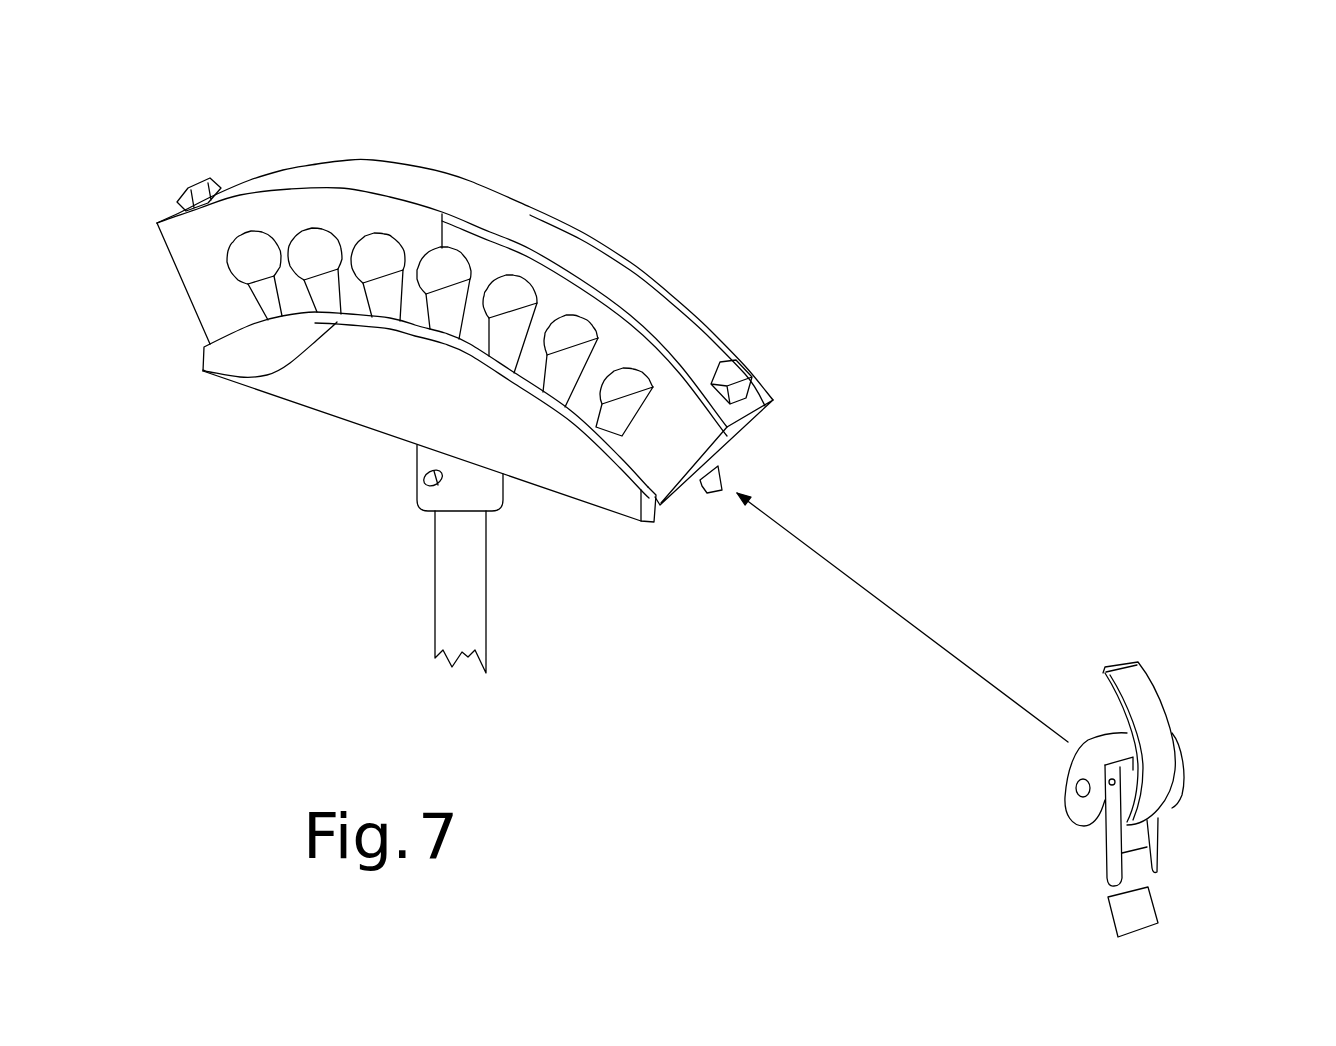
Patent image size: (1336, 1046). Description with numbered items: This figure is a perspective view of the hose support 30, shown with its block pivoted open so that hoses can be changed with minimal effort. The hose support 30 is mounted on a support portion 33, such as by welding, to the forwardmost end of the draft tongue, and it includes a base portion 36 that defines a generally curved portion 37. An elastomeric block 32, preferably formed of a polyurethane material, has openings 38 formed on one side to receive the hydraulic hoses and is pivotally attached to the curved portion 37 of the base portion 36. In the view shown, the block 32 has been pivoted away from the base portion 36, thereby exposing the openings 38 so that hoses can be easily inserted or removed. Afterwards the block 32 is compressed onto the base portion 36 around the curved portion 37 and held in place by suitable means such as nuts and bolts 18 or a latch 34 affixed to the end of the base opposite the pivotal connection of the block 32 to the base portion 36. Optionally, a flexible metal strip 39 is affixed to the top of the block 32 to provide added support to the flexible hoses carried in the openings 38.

The bolts 18 is at (195, 180).
The hose support 30 is at (793, 247).
The elastomeric block 32 is at (735, 452).
The support portion 33 is at (430, 585).
The latch 34 is at (1185, 757).
The base portion 36 is at (310, 407).
The curved portion 37 is at (203, 371).
The openings 38 is at (620, 433).
The flexible metal strip 39 is at (530, 218).